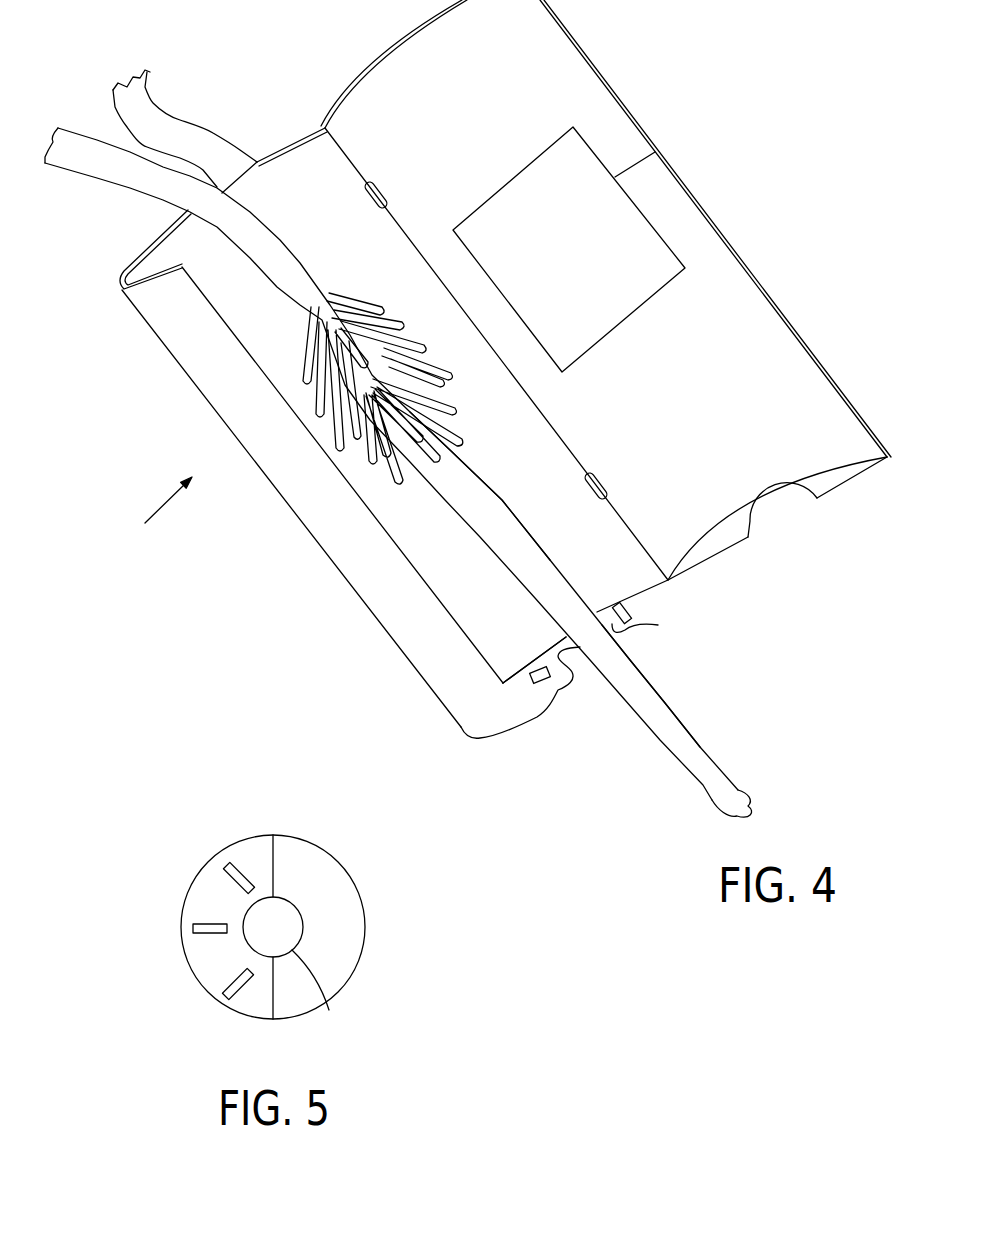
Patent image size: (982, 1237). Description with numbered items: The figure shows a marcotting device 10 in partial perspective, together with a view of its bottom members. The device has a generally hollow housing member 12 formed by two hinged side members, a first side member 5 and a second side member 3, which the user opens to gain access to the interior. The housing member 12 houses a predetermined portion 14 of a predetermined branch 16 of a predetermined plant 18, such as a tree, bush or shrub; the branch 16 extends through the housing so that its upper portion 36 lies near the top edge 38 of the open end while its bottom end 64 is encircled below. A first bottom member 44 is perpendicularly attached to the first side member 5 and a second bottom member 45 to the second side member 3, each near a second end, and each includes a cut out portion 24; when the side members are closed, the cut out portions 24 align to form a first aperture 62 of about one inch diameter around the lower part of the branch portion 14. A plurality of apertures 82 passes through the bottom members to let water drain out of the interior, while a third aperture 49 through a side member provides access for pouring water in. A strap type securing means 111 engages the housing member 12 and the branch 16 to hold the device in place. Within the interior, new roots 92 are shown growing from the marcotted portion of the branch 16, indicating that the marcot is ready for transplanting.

In FIG. 4, the second side member 3 is at (710, 283).
In FIG. 4, the first side member 5 is at (302, 505).
In FIG. 4, the marcotting device 10 is at (155, 514).
In FIG. 4, the housing member 12 is at (387, 607).
In FIG. 4, the predetermined portion of branch 14 is at (490, 492).
In FIG. 4, the predetermined branch 16 is at (100, 165).
In FIG. 4, the predetermined plant 18 is at (72, 153).
In FIG. 4, the cut out portion 24 is at (777, 500).
In FIG. 5, the cut out portion 24 is at (283, 915).
In FIG. 4, the upper portion of branch 36 is at (277, 257).
In FIG. 4, the top edge 38 is at (153, 236).
In FIG. 4, the first bottom member 44 is at (535, 697).
In FIG. 5, the first bottom member 44 is at (247, 852).
In FIG. 4, the second bottom member 45 is at (827, 480).
In FIG. 5, the second bottom member 45 is at (337, 950).
In FIG. 4, the third aperture 49 is at (658, 150).
In FIG. 5, the first aperture 62 is at (247, 917).
In FIG. 4, the bottom end of branch portion 64 is at (640, 677).
In FIG. 4, the second plurality of apertures 82 is at (573, 185).
In FIG. 5, the second plurality of apertures 82 is at (193, 927).
In FIG. 4, the new roots 92 is at (380, 310).
In FIG. 4, the strap type securing means 111 is at (140, 88).